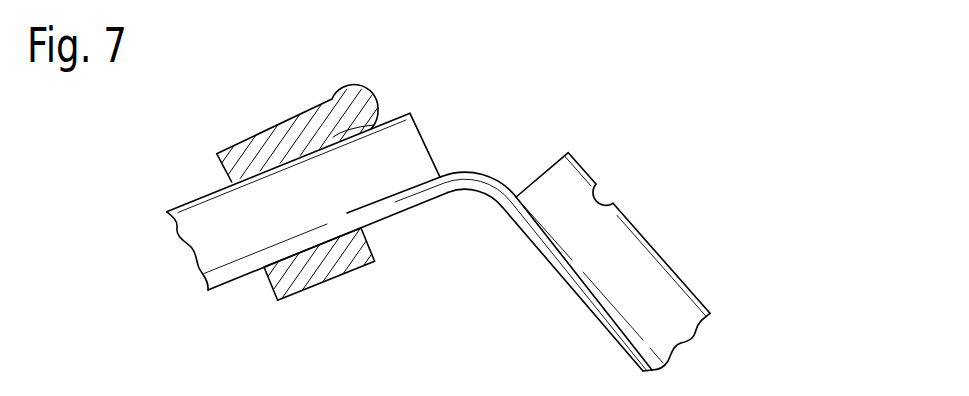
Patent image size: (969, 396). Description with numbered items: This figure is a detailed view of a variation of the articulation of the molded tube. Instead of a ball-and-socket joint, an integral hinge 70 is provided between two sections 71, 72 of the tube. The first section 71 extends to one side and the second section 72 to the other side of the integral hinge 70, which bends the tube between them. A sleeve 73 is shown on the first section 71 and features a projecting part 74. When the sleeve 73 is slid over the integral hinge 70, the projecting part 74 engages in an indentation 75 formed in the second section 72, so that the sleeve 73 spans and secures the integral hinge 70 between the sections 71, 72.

The integral hinge 70 is at (472, 210).
The section 71 is at (242, 243).
The section 72 is at (627, 249).
The sleeve 73 is at (282, 138).
The projecting part 74 is at (377, 122).
The indentation 75 is at (609, 183).